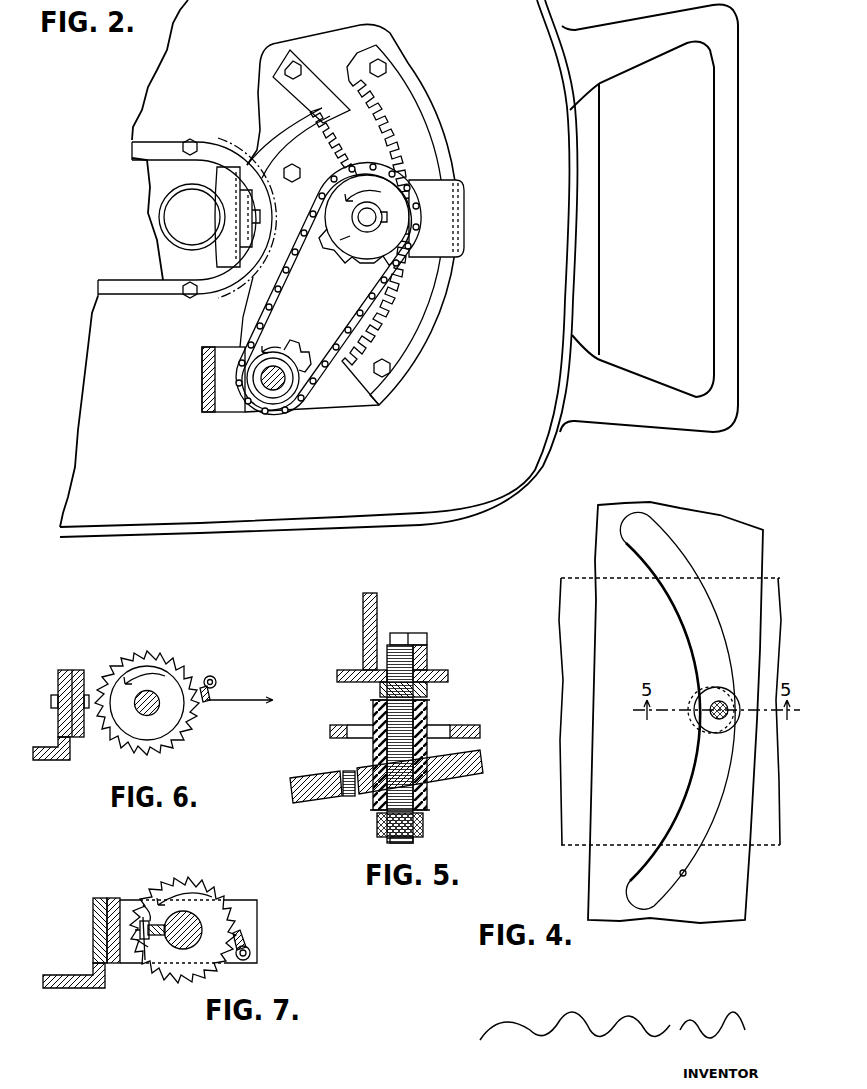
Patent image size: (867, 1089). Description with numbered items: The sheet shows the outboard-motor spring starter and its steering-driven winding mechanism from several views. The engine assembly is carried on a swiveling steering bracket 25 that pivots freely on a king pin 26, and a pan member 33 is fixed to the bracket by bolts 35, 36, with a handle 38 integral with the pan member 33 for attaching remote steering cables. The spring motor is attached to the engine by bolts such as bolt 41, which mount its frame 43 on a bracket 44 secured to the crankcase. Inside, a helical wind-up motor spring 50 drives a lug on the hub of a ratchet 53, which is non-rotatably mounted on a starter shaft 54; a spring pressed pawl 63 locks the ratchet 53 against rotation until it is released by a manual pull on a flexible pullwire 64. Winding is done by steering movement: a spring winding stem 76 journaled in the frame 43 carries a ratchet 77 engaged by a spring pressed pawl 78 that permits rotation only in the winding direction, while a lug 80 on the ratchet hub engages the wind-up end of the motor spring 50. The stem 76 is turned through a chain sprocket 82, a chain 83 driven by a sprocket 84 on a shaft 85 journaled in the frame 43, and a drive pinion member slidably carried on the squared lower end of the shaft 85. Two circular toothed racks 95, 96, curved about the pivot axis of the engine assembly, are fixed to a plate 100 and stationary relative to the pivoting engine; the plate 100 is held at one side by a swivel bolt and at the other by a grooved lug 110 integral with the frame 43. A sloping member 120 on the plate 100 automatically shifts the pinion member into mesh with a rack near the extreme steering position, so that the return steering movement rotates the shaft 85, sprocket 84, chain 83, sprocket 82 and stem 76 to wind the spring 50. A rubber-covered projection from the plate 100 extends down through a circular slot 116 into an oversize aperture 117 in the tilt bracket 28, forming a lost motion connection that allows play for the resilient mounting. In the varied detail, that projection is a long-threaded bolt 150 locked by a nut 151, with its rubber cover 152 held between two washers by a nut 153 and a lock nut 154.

In FIG. 2, the swiveling steering bracket 25 is at (152, 190).
In FIG. 2, the king pin 26 is at (204, 221).
In FIG. 2, the tilt bracket 28 is at (601, 286).
In FIG. 5, the tilt bracket 28 is at (316, 799).
In FIG. 4, the tilt bracket 28 is at (561, 768).
In FIG. 2, the pan member 33 is at (260, 22).
In FIG. 5, the pan member 33 is at (332, 737).
In FIG. 4, the pan member 33 is at (602, 553).
In FIG. 2, the bolt 35 is at (191, 141).
In FIG. 2, the bolt 36 is at (191, 299).
In FIG. 2, the handle 38 is at (656, 382).
In FIG. 6, the bolt 41 is at (52, 698).
In FIG. 2, the frame 43 is at (328, 289).
In FIG. 6, the frame 43 is at (90, 665).
In FIG. 7, the frame 43 is at (258, 900).
In FIG. 6, the bracket 44 is at (50, 761).
In FIG. 7, the bracket 44 is at (83, 988).
In FIG. 7, the wind-up motor spring 50 is at (144, 959).
In FIG. 6, the ratchet 53 is at (190, 735).
In FIG. 6, the starter shaft 54 is at (150, 713).
In FIG. 6, the spring pressed pawl 63 is at (216, 686).
In FIG. 6, the pullwire 64 is at (236, 701).
In FIG. 2, the spring winding stem 76 is at (276, 388).
In FIG. 7, the spring winding stem 76 is at (203, 930).
In FIG. 7, the ratchet 77 is at (168, 882).
In FIG. 7, the spring pressed pawl 78 is at (258, 945).
In FIG. 7, the lug 80 is at (147, 906).
In FIG. 2, the chain sprocket 82 is at (300, 356).
In FIG. 2, the chain 83 is at (296, 406).
In FIG. 2, the sprocket 84 is at (350, 261).
In FIG. 2, the shaft 85 is at (366, 222).
In FIG. 2, the circular toothed rack 95 is at (357, 66).
In FIG. 5, the circular toothed rack 95 is at (364, 631).
In FIG. 2, the circular toothed rack 96 is at (284, 135).
In FIG. 2, the plate 100 is at (333, 35).
In FIG. 2, the lug 110 is at (466, 214).
In FIG. 5, the circular slot 116 is at (358, 726).
In FIG. 4, the circular slot 116 is at (686, 875).
In FIG. 5, the aperture 117 is at (344, 797).
In FIG. 4, the aperture 117 is at (715, 687).
In FIG. 2, the sloping member 120 is at (328, 104).
In FIG. 5, the bolt 150 is at (421, 633).
In FIG. 5, the nut 151 is at (428, 690).
In FIG. 5, the rubber cover 152 is at (428, 801).
In FIG. 5, the nut 153 is at (425, 818).
In FIG. 5, the lock nut 154 is at (420, 836).